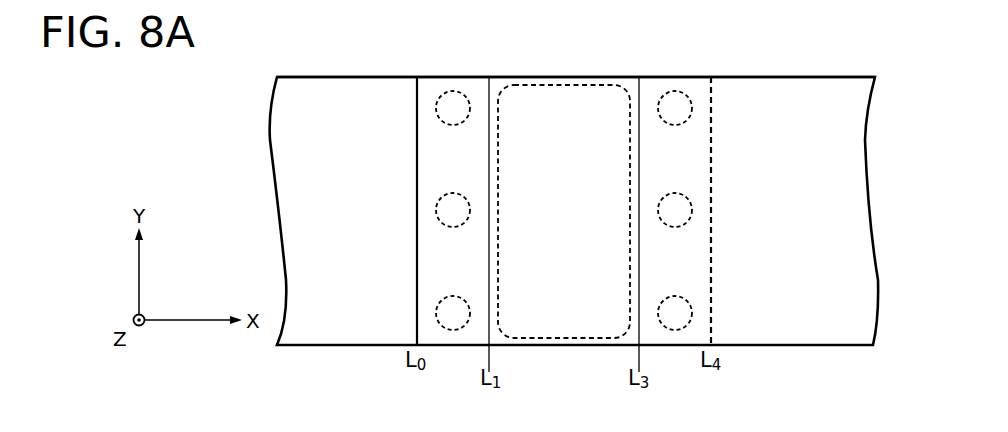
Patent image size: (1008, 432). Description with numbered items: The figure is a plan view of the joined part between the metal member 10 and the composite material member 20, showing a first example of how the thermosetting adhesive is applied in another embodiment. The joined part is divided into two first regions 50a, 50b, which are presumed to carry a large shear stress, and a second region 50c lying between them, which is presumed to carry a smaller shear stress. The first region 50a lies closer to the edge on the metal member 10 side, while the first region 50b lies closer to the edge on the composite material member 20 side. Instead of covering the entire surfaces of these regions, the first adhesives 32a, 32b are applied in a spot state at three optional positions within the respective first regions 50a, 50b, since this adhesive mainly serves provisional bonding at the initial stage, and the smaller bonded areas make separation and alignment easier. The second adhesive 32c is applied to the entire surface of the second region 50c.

The metal member 10 is at (790, 77).
The composite material member 20 is at (336, 77).
The first adhesive 32a is at (436, 107).
The first adhesive 32b is at (692, 107).
The second adhesive 32c is at (548, 338).
The first region 50a is at (418, 72).
The first region 50b is at (643, 72).
The second region 50c is at (497, 72).